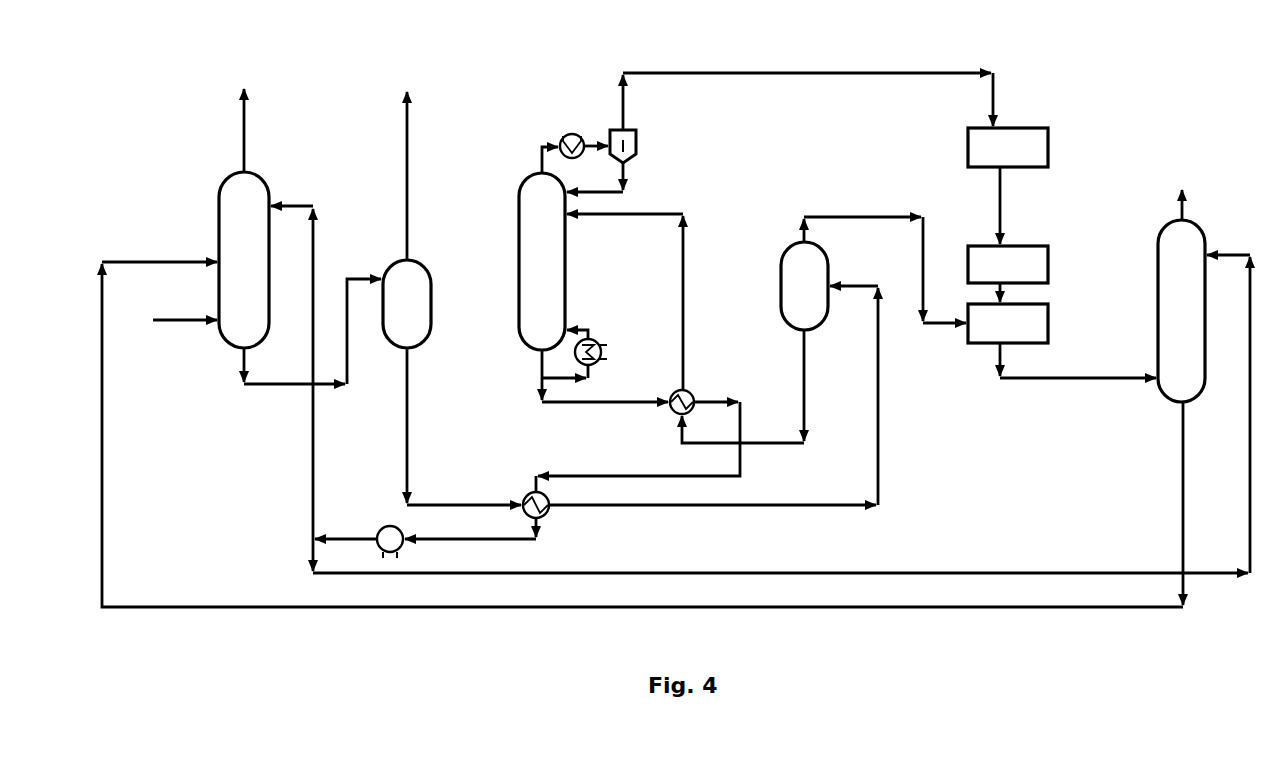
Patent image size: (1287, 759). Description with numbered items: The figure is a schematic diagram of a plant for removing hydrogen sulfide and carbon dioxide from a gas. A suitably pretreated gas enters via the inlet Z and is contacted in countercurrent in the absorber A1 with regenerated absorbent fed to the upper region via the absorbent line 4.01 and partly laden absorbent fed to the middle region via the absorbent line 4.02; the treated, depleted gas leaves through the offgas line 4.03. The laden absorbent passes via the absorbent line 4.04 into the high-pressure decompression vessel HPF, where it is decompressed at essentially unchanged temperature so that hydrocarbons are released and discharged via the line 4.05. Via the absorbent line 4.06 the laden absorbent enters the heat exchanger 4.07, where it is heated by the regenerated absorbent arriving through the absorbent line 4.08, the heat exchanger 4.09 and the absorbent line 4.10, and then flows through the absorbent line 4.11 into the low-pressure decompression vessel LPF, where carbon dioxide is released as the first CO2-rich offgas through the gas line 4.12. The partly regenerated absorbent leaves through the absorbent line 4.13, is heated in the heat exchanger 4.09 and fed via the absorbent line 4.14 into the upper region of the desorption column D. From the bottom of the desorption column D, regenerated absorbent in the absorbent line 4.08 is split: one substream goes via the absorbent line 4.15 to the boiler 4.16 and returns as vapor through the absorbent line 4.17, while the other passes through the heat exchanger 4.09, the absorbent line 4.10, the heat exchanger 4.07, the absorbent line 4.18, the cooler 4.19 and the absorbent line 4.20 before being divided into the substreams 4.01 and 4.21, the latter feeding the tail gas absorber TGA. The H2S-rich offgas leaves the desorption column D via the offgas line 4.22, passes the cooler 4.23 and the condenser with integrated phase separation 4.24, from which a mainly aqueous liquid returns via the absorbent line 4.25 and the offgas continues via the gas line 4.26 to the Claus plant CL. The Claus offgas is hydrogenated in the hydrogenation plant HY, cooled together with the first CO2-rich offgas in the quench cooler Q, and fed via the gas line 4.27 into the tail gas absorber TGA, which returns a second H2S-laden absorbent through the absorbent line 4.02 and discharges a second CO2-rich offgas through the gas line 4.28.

The absorber A1 is at (226, 345).
The inlet Z is at (175, 318).
The high-pressure decompression vessel HPF is at (428, 258).
The desorption column D is at (518, 258).
The low-pressure decompression vessel LPF is at (830, 252).
The tail gas absorber TGA is at (1160, 232).
The Claus plant CL is at (1025, 128).
The hydrogenation plant HY is at (1025, 246).
The quench cooler Q is at (1048, 325).
The absorbent line 4.01 is at (294, 204).
The absorbent line 4.02 is at (505, 608).
The offgas line 4.03 is at (244, 124).
The absorbent line 4.04 is at (250, 388).
The line 4.05 is at (407, 124).
The absorbent line 4.06 is at (408, 440).
The heat exchanger 4.07 is at (548, 512).
The absorbent line 4.08 is at (542, 368).
The heat exchanger 4.09 is at (692, 392).
The absorbent line 4.10 is at (540, 474).
The absorbent line 4.11 is at (880, 468).
The gas line 4.12 is at (845, 216).
The absorbent line 4.13 is at (806, 398).
The absorbent line 4.14 is at (688, 272).
The absorbent line 4.15 is at (588, 378).
The boiler 4.16 is at (600, 340).
The absorbent line 4.17 is at (582, 329).
The absorbent line 4.18 is at (520, 542).
The cooler 4.19 is at (388, 526).
The absorbent line 4.20 is at (343, 538).
The absorbent line 4.21 is at (455, 575).
The offgas line 4.22 is at (548, 149).
The cooler 4.23 is at (572, 133).
The condenser with integrated phase separation 4.24 is at (637, 140).
The absorbent line 4.25 is at (624, 176).
The gas line 4.26 is at (652, 72).
The gas line 4.27 is at (1085, 377).
The gas line 4.28 is at (1183, 212).